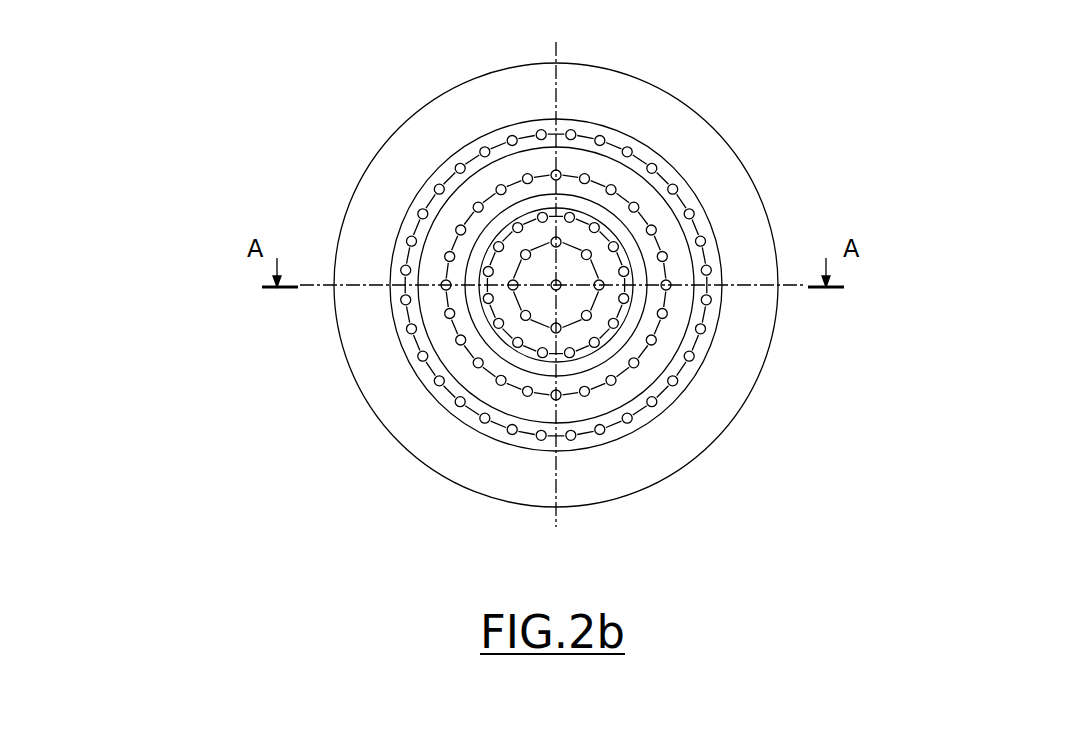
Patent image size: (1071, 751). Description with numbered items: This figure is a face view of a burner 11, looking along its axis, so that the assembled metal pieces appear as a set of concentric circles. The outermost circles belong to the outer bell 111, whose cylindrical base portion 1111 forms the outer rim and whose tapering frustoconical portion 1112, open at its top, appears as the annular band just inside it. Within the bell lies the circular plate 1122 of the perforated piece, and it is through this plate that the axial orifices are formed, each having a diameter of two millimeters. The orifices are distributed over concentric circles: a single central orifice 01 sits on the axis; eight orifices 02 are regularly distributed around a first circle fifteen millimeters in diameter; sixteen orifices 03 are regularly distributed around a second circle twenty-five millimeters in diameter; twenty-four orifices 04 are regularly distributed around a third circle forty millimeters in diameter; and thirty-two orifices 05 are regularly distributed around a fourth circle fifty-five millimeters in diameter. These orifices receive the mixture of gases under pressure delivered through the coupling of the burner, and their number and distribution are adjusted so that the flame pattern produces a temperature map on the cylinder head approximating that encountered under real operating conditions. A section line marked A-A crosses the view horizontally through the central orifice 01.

The burner 11 is at (367, 142).
The outer bell 111 is at (733, 365).
The cylindrical base portion 1111 is at (350, 370).
The tapering frustoconical portion 1112 is at (723, 150).
The circular plate 1122 is at (580, 157).
The central orifice 01 is at (550, 282).
The orifices 02 is at (525, 250).
The orifices 03 is at (638, 287).
The orifices 04 is at (636, 368).
The orifices 05 is at (459, 408).